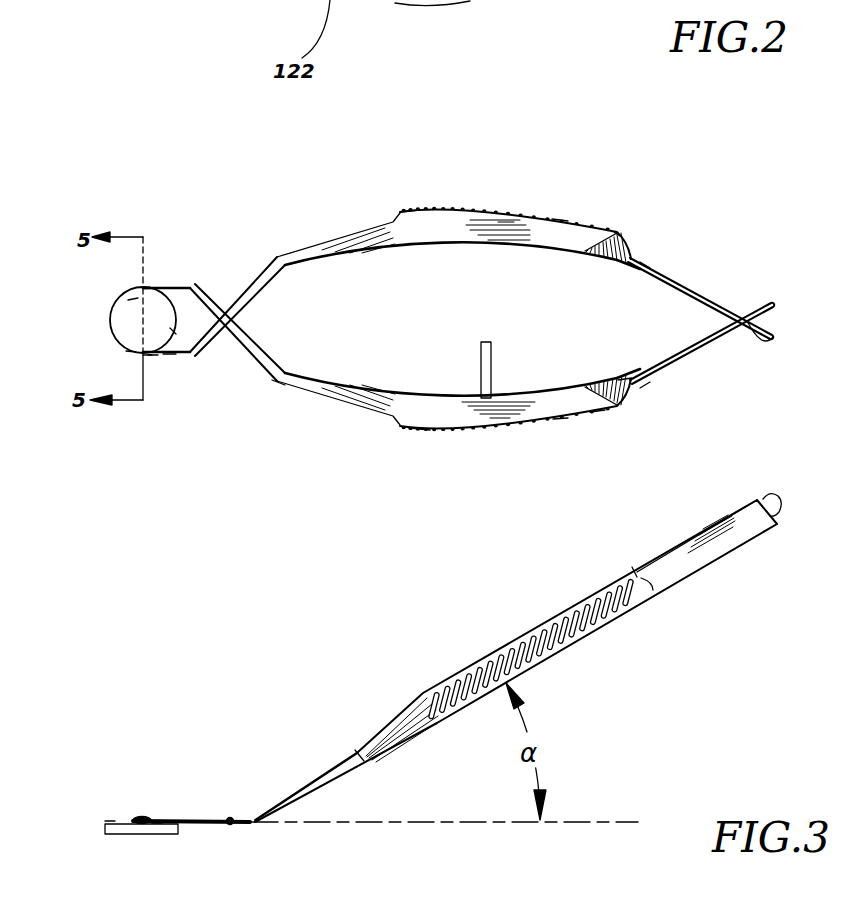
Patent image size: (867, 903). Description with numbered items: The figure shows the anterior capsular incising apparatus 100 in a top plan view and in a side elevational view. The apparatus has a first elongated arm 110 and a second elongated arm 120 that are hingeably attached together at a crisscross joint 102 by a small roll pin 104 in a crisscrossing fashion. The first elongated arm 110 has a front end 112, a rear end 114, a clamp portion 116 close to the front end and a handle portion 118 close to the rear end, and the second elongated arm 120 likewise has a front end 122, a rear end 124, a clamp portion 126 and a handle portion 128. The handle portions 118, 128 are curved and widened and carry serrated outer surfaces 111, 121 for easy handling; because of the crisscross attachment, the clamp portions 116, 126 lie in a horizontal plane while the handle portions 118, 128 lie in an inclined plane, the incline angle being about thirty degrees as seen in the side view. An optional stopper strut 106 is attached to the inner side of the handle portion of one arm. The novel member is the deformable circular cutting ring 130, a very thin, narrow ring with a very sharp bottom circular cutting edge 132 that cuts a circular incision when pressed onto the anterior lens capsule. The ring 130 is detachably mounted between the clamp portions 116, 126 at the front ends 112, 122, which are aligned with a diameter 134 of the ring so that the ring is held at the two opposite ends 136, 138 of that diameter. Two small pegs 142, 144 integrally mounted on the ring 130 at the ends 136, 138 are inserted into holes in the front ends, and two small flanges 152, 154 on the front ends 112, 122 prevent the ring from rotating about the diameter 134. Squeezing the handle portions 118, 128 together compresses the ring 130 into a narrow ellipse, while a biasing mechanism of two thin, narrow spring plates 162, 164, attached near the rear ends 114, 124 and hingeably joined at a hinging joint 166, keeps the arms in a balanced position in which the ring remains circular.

In FIG. 2, the anterior capsular incising apparatus 100 is at (702, 185).
In FIG. 2, the crisscross joint 102 is at (243, 314).
In FIG. 3, the crisscross joint 102 is at (230, 824).
In FIG. 2, the small roll pin 104 is at (278, 381).
In FIG. 3, the small roll pin 104 is at (230, 821).
In FIG. 2, the stopper strut 106 is at (493, 368).
In FIG. 2, the first elongated arm 110 is at (428, 446).
In FIG. 2, the serrated outer surface 111 is at (560, 420).
In FIG. 3, the serrated outer surface 111 is at (373, 748).
In FIG. 2, the front end 112 is at (147, 287).
In FIG. 2, the rear end 114 is at (623, 383).
In FIG. 3, the rear end 114 is at (653, 590).
In FIG. 2, the clamp portion 116 is at (180, 288).
In FIG. 2, the handle portion 118 is at (597, 411).
In FIG. 3, the handle portion 118 is at (423, 720).
In FIG. 2, the second elongated arm 120 is at (418, 195).
In FIG. 2, the serrated outer surface 121 is at (560, 210).
In FIG. 2, the front end 122 is at (150, 357).
In FIG. 3, the front end 122 is at (157, 824).
In FIG. 2, the rear end 124 is at (615, 232).
In FIG. 2, the clamp portion 126 is at (168, 354).
In FIG. 3, the clamp portion 126 is at (200, 821).
In FIG. 2, the handle portion 128 is at (511, 232).
In FIG. 2, the deformable circular cutting ring 130 is at (110, 344).
In FIG. 3, the deformable circular cutting ring 130 is at (98, 817).
In FIG. 3, the bottom circular cutting edge 132 is at (127, 834).
In FIG. 2, the diameter 134 is at (135, 298).
In FIG. 2, the opposite end of the diameter 136 is at (143, 314).
In FIG. 2, the opposite end of the diameter 138 is at (133, 351).
In FIG. 2, the small peg 142 is at (143, 286).
In FIG. 2, the small peg 144 is at (147, 356).
In FIG. 3, the small peg 144 is at (138, 821).
In FIG. 2, the small flange 152 is at (168, 287).
In FIG. 2, the small flange 154 is at (174, 331).
In FIG. 3, the small flange 154 is at (137, 821).
In FIG. 2, the first thin spring plate 162 is at (713, 343).
In FIG. 3, the first thin spring plate 162 is at (733, 530).
In FIG. 2, the second thin spring plate 164 is at (703, 290).
In FIG. 2, the hinging joint 166 is at (775, 338).
In FIG. 3, the hinging joint 166 is at (773, 523).